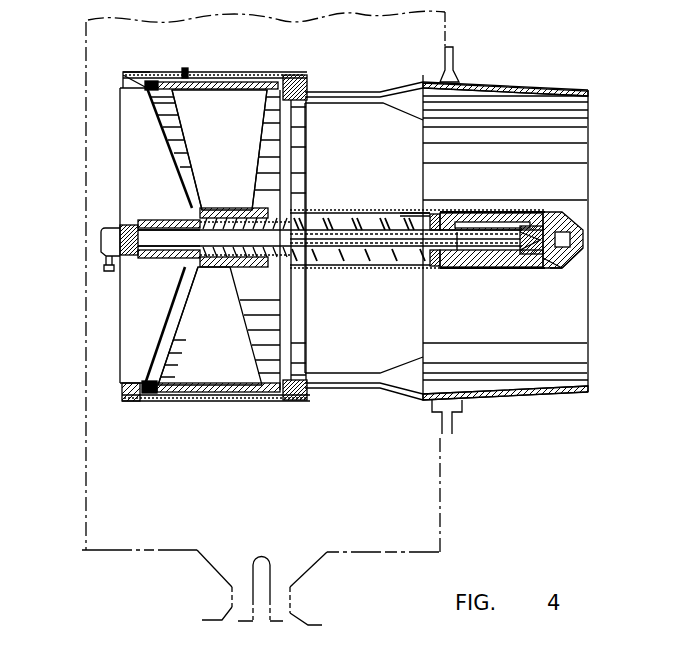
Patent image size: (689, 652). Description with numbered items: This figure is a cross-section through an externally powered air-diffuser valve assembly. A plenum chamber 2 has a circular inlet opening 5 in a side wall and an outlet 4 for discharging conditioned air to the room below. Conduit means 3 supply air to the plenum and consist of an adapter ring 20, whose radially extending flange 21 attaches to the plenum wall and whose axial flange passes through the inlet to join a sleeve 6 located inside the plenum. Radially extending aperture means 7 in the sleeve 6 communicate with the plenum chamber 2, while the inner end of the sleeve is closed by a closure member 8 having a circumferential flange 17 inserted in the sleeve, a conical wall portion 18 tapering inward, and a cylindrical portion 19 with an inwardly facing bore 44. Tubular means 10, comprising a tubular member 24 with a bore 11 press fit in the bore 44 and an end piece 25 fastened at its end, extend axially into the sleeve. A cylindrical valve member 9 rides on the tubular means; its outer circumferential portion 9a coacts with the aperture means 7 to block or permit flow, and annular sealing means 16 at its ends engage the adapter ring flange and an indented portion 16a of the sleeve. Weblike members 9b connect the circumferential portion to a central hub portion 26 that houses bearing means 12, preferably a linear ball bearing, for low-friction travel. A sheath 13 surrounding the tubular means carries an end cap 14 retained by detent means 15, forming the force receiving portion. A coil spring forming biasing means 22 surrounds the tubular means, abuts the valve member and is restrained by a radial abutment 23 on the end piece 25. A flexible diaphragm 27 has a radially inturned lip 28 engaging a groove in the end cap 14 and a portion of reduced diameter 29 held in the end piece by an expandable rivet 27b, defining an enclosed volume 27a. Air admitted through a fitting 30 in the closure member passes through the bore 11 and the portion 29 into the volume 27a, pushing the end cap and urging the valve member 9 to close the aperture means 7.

The plenum chamber 2 is at (97, 33).
The conduit means 3 is at (494, 70).
The outlet 4 is at (223, 563).
The inlet opening 5 is at (438, 430).
The sleeve 6 is at (194, 401).
The aperture means 7 is at (311, 80).
The closure member 8 is at (155, 147).
The valve member 9 is at (184, 66).
The outer circumferential portion 9a is at (214, 73).
The weblike members 9b is at (233, 373).
The tubular means 10 is at (343, 208).
The bore 11 is at (411, 212).
The bearing means 12 is at (250, 209).
The sheath 13 is at (322, 212).
The end cap 14 is at (570, 222).
The detent means 15 is at (555, 270).
The annular sealing means 16 is at (152, 393).
The indented portion 16a is at (290, 75).
The circumferential flange 17 is at (139, 72).
The conical wall portion 18 is at (166, 304).
The cylindrical portion 19 is at (152, 220).
The adapter ring 20 is at (545, 88).
The radially extending flange 21 is at (455, 56).
The biasing means 22 is at (364, 270).
The radial abutment 23 is at (455, 270).
The tubular member 24 is at (373, 212).
The end piece 25 is at (446, 212).
The central hub portion 26 is at (224, 268).
The flexible diaphragm 27 is at (487, 211).
The enclosed volume 27a is at (530, 213).
The expandable rivet 27b is at (580, 256).
The radially inturned lip 28 is at (548, 268).
The portion of reduced diameter 29 is at (530, 265).
The fitting 30 is at (104, 233).
The bore 44 is at (157, 250).